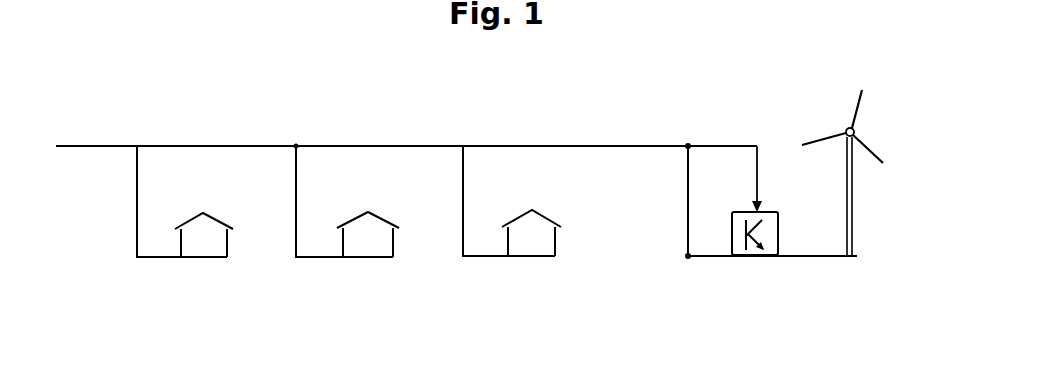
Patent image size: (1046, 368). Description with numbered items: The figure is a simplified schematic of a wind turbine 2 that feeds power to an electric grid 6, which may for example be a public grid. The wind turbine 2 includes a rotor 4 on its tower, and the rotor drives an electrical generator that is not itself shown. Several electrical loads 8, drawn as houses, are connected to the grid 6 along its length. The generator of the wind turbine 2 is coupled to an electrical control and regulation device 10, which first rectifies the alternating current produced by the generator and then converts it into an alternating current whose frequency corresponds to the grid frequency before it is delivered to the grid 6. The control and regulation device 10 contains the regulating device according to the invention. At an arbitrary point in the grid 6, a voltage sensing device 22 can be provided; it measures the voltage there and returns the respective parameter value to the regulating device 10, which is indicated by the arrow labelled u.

The wind turbine 2 is at (875, 183).
The rotor 4 is at (870, 131).
The electric grid 6 is at (199, 128).
The electrical loads 8 is at (203, 280).
The control and regulation device 10 is at (740, 257).
The voltage sensing device 22 is at (770, 188).